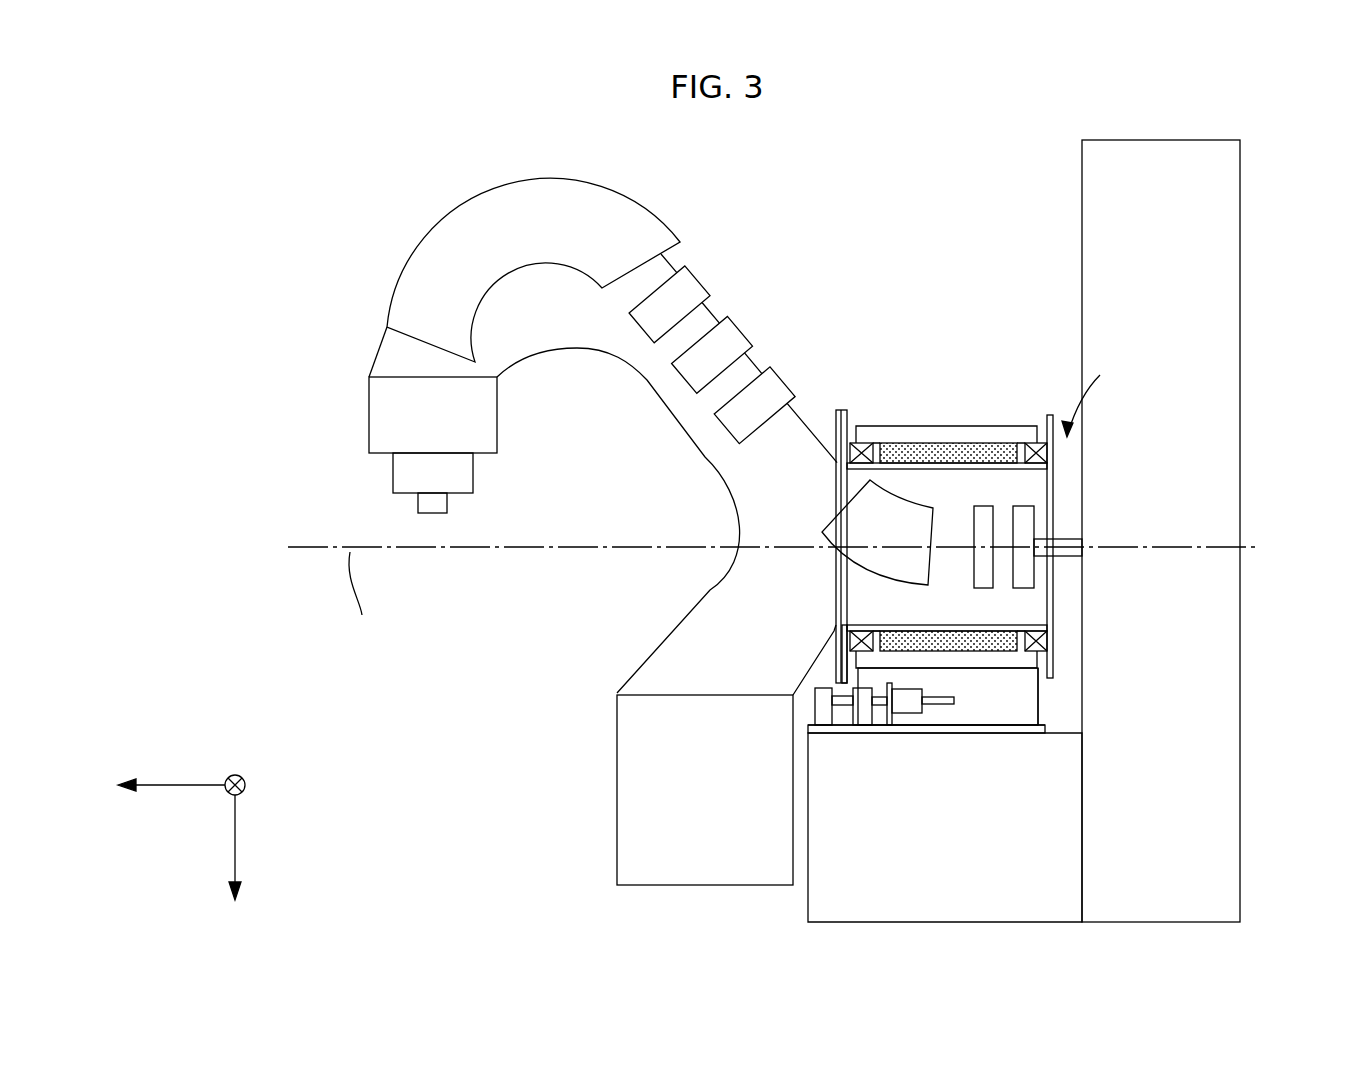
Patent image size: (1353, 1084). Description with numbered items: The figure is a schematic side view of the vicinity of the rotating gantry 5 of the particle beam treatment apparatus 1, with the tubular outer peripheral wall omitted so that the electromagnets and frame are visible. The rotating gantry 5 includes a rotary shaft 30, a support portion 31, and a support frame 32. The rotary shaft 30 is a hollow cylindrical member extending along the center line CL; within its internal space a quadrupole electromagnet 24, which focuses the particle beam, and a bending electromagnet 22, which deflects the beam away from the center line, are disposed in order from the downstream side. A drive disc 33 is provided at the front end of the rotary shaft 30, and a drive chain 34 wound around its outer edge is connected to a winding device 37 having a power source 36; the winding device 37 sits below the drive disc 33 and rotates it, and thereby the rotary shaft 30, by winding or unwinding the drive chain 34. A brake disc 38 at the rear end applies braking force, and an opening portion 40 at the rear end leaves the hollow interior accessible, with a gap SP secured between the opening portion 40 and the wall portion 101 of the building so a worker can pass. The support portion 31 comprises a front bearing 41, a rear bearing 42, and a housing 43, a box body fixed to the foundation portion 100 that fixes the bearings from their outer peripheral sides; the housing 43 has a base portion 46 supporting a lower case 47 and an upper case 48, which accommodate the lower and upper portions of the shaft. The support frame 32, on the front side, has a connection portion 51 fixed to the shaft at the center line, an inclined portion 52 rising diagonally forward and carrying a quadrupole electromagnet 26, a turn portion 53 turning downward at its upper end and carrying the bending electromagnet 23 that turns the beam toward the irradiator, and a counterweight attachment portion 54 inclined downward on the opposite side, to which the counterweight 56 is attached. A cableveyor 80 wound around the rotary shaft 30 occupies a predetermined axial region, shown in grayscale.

The particle beam treatment apparatus 1 is at (176, 200).
The rotating gantry 5 is at (932, 212).
The bending electromagnet 22 is at (862, 557).
The bending electromagnet 23 is at (485, 212).
The quadrupole electromagnet 24 is at (1020, 577).
The quadrupole electromagnet 26 is at (790, 385).
The rotary shaft 30 is at (920, 445).
The support portion 31 is at (954, 490).
The support frame 32 is at (603, 510).
The drive disc 33 is at (843, 410).
The drive chain 34 is at (843, 690).
The power source 36 is at (912, 705).
The winding device 37 is at (877, 742).
The brake disc 38 is at (1048, 415).
The opening portion 40 is at (1062, 508).
The bearing 41 is at (843, 625).
The bearing 42 is at (1042, 638).
The housing 43 is at (885, 419).
The base portion 46 is at (1038, 690).
The lower case 47 is at (993, 670).
The upper case 48 is at (990, 425).
The connection portion 51 is at (760, 508).
The inclined portion 52 is at (677, 383).
The turn portion 53 is at (560, 337).
The counterweight attachment portion 54 is at (705, 620).
The counterweight 56 is at (640, 775).
The cableveyor 80 is at (965, 445).
The foundation portion 100 is at (820, 905).
The wall portion 101 is at (1212, 318).